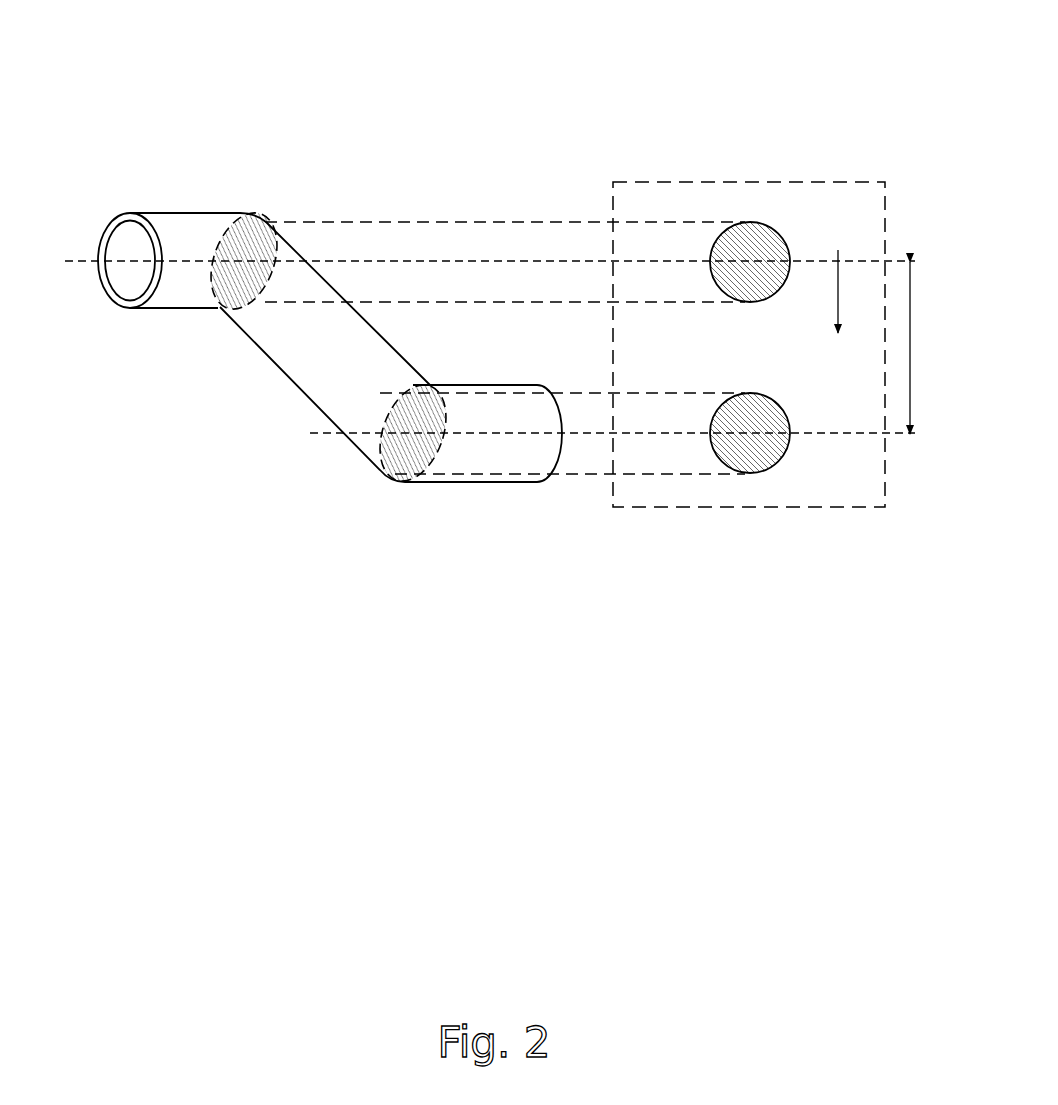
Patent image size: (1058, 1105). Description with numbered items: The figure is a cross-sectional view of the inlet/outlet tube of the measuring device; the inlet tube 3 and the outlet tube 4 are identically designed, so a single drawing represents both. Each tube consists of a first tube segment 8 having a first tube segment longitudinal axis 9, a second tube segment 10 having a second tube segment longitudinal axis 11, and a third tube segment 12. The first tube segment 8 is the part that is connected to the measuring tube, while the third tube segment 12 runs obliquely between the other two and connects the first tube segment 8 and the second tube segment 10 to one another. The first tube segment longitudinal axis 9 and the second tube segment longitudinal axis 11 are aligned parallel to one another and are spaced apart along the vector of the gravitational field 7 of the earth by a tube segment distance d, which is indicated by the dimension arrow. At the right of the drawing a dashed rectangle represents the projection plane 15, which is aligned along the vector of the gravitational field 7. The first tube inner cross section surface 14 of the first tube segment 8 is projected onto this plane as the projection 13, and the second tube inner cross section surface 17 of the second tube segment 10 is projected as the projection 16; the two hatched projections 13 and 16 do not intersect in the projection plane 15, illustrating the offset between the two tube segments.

The inlet tube 3 is at (501, 303).
The outlet tube 4 is at (501, 334).
The vector of the gravitational field 7 is at (837, 273).
The first tube segment 8 is at (488, 482).
The first tube segment longitudinal axis 9 is at (330, 433).
The second tube segment 10 is at (166, 303).
The second tube segment longitudinal axis 11 is at (66, 262).
The third tube segment 12 is at (320, 357).
The projection of the first tube inner cross section surface 13 is at (738, 460).
The first tube inner cross section surface 14 is at (400, 455).
The projection plane 15 is at (835, 180).
The projection of the second tube inner cross section surface 16 is at (750, 235).
The second tube inner cross section surface 17 is at (236, 222).